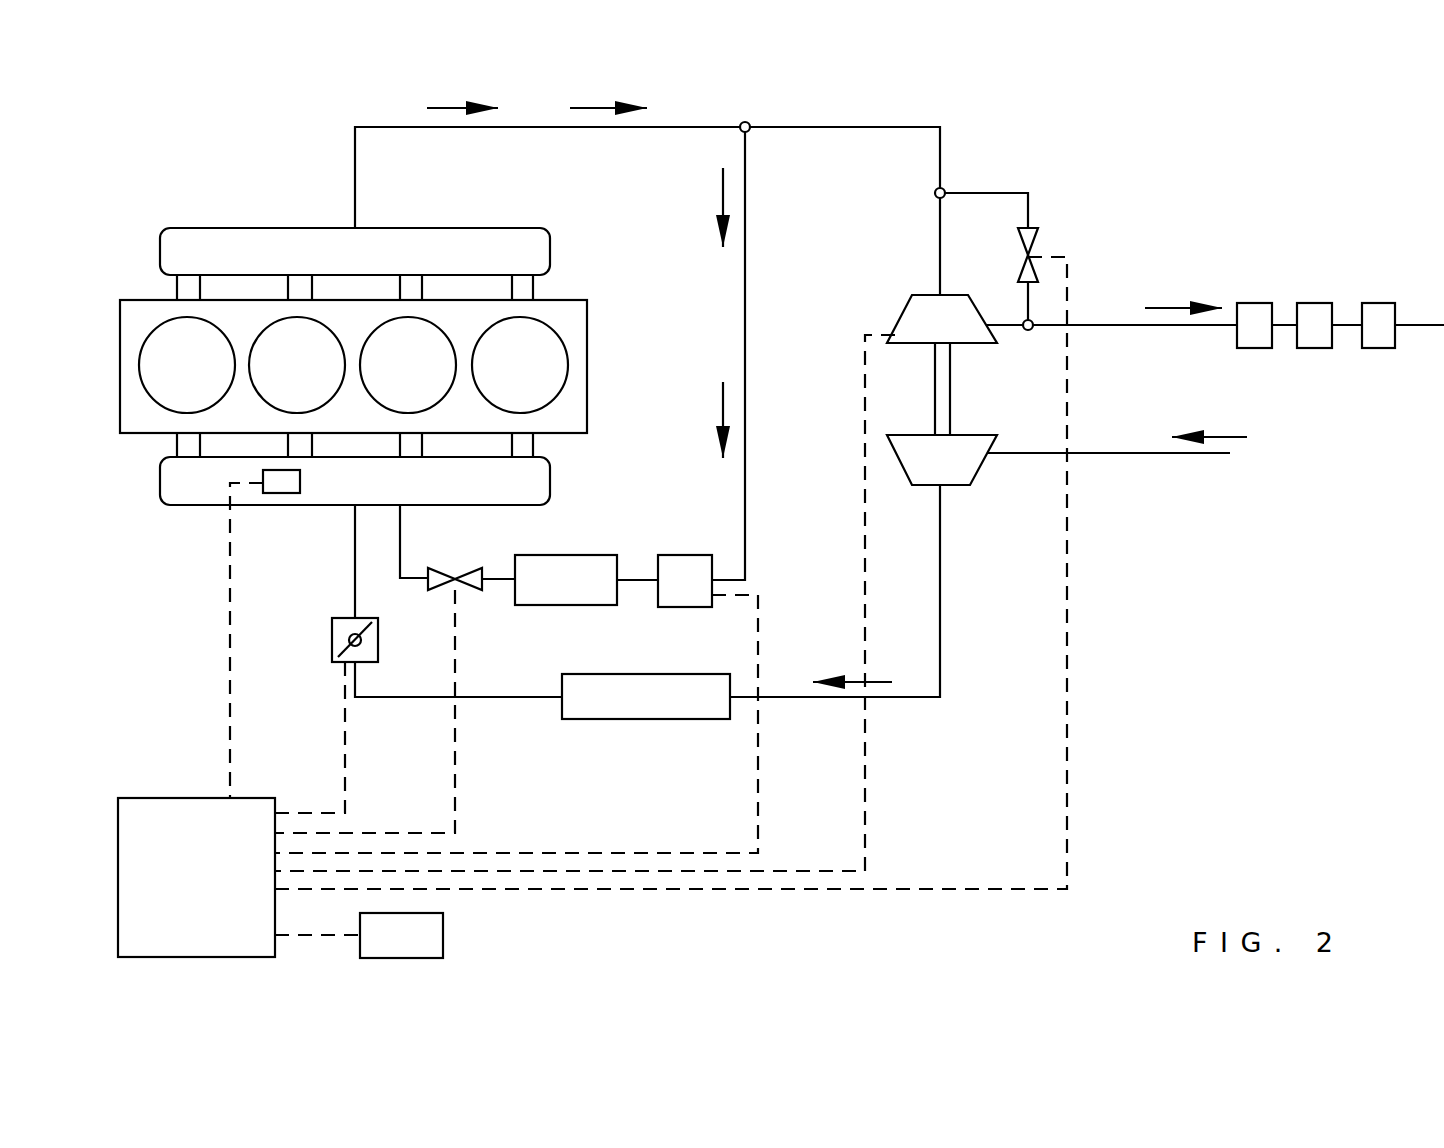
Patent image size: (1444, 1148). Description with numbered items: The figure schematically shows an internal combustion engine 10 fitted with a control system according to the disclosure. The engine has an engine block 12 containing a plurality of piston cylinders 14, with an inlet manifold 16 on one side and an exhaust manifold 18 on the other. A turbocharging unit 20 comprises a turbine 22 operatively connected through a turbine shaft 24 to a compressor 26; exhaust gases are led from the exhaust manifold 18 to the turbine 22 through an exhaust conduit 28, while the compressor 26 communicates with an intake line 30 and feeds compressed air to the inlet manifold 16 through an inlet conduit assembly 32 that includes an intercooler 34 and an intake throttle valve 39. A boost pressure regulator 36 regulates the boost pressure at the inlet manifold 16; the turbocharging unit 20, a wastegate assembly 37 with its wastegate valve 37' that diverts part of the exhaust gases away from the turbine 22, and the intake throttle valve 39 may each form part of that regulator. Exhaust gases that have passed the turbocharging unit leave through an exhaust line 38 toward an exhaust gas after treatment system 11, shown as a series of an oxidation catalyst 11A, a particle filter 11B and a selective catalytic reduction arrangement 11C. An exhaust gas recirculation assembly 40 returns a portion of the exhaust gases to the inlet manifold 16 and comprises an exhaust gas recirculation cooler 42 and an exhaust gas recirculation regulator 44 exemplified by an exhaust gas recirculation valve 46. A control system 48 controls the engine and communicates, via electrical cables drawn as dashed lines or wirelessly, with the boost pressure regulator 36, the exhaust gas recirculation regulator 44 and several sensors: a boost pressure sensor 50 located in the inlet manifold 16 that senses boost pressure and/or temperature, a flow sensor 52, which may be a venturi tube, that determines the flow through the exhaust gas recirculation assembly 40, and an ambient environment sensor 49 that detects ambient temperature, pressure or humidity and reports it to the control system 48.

The internal combustion engine 10 is at (277, 122).
The exhaust gas after treatment system 11 is at (1323, 338).
The oxidation catalyst 11A is at (1260, 303).
The particle filter 11B is at (1325, 303).
The selective catalytic reduction arrangement 11C is at (1400, 303).
The engine block 12 is at (193, 537).
The piston cylinders 14 is at (165, 333).
The inlet manifold 16 is at (203, 483).
The exhaust manifold 18 is at (245, 250).
The turbocharging unit 20 is at (912, 399).
The turbine 22 is at (916, 322).
The turbine shaft 24 is at (942, 380).
The compressor 26 is at (962, 463).
The exhaust conduit 28 is at (855, 127).
The intake line 30 is at (1113, 460).
The inlet conduit assembly 32 is at (792, 710).
The intercooler 34 is at (646, 696).
The boost pressure regulator 36 is at (312, 663).
The wastegate assembly 37 is at (1023, 205).
The wastegate valve 37' is at (1116, 194).
The exhaust line 38 is at (1095, 320).
The intake throttle valve 39 is at (332, 621).
The exhaust gas recirculation assembly 40 is at (757, 267).
The exhaust gas recirculation cooler 42 is at (586, 580).
The exhaust gas recirculation regulator 44 is at (469, 612).
The exhaust gas recirculation valve 46 is at (445, 568).
The control system 48 is at (592, 607).
The ambient environment sensor 49 is at (401, 935).
The boost pressure sensor 50 is at (282, 493).
The flow sensor 52 is at (685, 581).